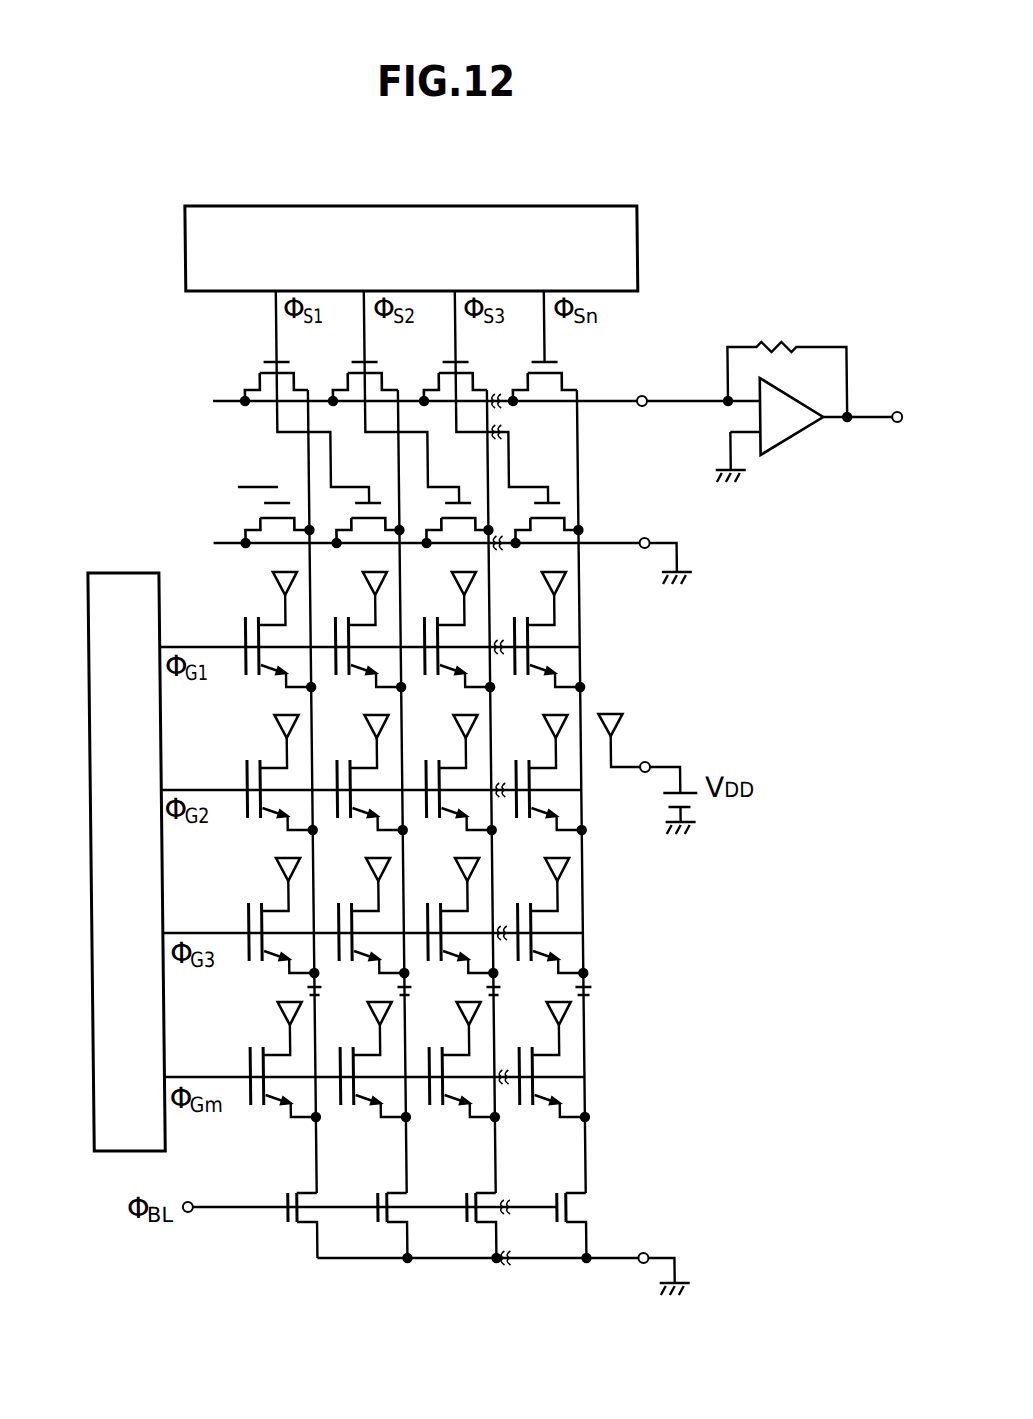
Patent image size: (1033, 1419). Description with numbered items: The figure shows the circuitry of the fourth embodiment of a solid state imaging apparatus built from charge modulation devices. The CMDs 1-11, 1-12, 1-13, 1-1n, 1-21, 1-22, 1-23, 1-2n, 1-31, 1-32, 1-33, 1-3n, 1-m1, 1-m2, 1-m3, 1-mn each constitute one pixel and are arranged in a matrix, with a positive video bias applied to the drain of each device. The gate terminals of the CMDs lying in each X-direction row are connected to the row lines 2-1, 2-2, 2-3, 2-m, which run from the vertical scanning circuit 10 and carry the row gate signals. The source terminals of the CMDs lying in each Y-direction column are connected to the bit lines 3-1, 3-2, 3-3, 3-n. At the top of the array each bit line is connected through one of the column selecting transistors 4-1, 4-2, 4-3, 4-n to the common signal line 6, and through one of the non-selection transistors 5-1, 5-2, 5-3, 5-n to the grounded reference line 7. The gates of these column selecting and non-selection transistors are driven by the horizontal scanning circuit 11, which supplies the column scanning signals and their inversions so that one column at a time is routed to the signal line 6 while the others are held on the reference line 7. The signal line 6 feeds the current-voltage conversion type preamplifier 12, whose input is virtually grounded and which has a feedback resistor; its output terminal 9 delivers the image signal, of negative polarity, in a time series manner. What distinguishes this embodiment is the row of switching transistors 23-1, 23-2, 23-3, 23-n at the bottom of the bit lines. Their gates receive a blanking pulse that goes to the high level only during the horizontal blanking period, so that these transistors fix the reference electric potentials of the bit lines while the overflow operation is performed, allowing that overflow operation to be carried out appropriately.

The horizontal scanning circuit 11 is at (639, 250).
The vertical scanning circuit 10 is at (116, 573).
The column selecting transistor 4-1 is at (255, 378).
The column selecting transistor 4-2 is at (347, 383).
The column selecting transistor 4-3 is at (437, 383).
The column selecting transistor 4-n is at (527, 383).
The non-selection transistor 5-1 is at (260, 520).
The non-selection transistor 5-2 is at (384, 505).
The non-selection transistor 5-3 is at (467, 501).
The non-selection transistor 5-n is at (550, 498).
The signal line 6 is at (695, 401).
The grounded reference line 7 is at (611, 543).
The output terminal 9 is at (897, 410).
The current-voltage conversion type preamplifier 12 is at (785, 440).
The row line 2-1 is at (214, 645).
The row line 2-2 is at (208, 788).
The row line 2-3 is at (202, 931).
The row line 2-m is at (204, 1076).
The CMD 1-11 is at (267, 679).
The CMD 1-12 is at (357, 679).
The CMD 1-13 is at (446, 679).
The CMD 1-1n is at (536, 679).
The CMD 1-21 is at (267, 822).
The CMD 1-22 is at (357, 822).
The CMD 1-23 is at (446, 822).
The CMD 1-2n is at (536, 822).
The CMD 1-31 is at (267, 965).
The CMD 1-32 is at (357, 965).
The CMD 1-33 is at (446, 965).
The CMD 1-3n is at (536, 965).
The CMD 1-m1 is at (267, 1109).
The CMD 1-m2 is at (357, 1109).
The CMD 1-m3 is at (446, 1109).
The CMD 1-mn is at (536, 1109).
The bit line 3-1 is at (308, 1177).
The bit line 3-2 is at (398, 1177).
The bit line 3-3 is at (487, 1177).
The bit line 3-n is at (578, 1175).
The switching transistor 23-1 is at (271, 1222).
The switching transistor 23-2 is at (371, 1222).
The switching transistor 23-3 is at (458, 1222).
The switching transistor 23-n is at (548, 1222).